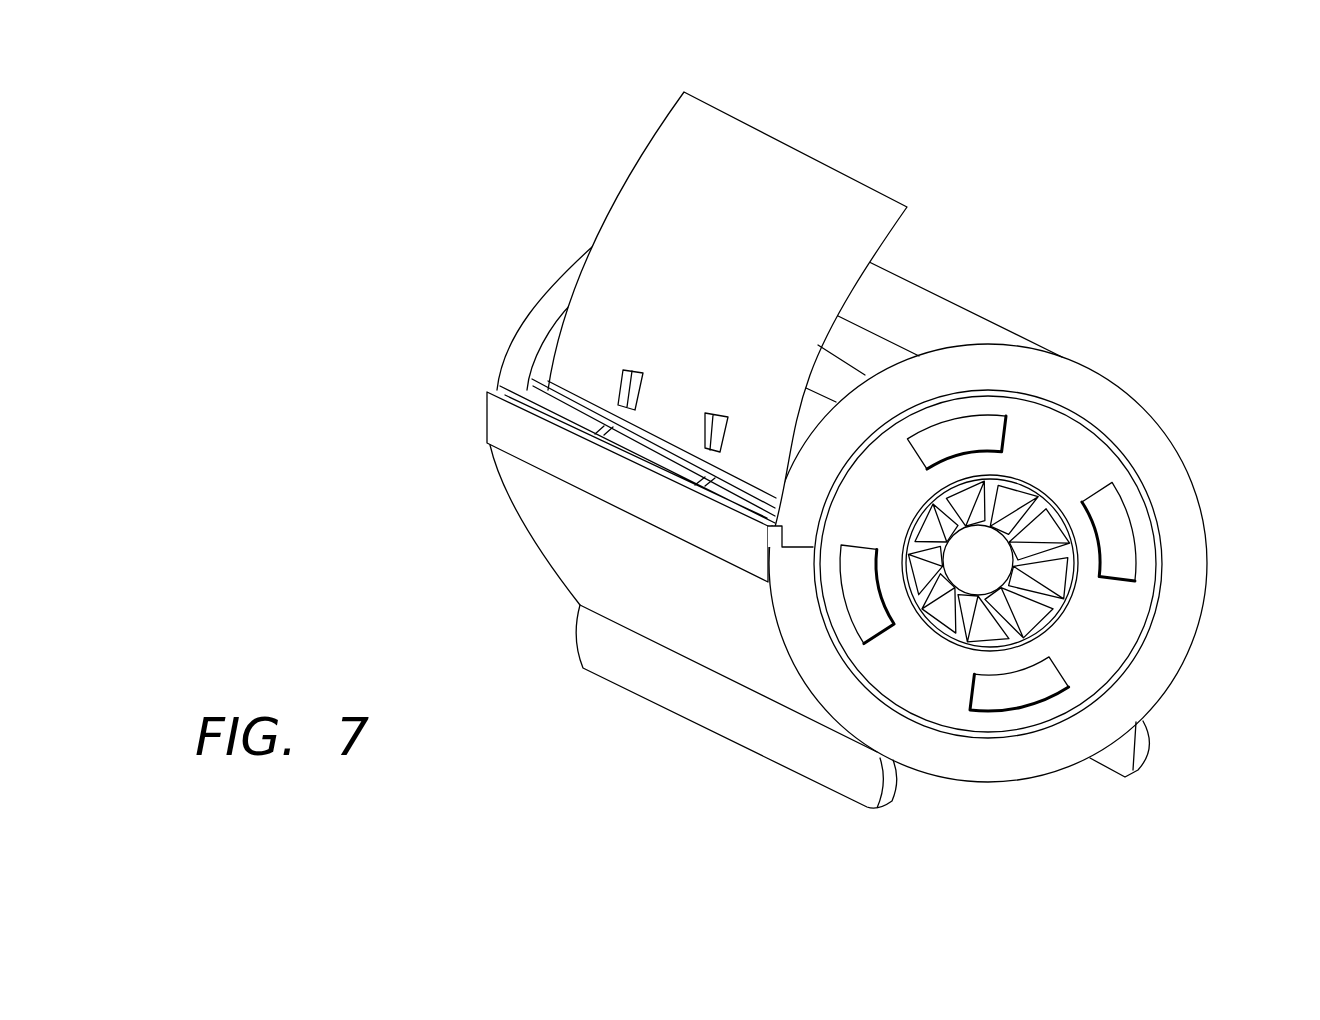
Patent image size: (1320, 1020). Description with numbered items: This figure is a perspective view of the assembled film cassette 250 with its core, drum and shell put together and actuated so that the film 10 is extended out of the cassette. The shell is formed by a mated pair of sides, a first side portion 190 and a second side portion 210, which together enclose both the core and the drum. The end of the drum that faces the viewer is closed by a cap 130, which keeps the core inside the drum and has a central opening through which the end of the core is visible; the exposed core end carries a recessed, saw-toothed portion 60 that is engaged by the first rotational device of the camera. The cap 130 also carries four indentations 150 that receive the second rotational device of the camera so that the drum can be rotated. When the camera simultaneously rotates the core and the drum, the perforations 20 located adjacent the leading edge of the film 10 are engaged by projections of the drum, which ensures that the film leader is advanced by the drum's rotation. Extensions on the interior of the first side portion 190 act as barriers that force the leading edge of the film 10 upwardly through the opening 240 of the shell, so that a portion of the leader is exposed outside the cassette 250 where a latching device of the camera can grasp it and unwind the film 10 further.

The film 10 is at (812, 152).
The perforations 20 is at (728, 410).
The recessed, saw-toothed portion 60 is at (1042, 540).
The cap 130 is at (1102, 630).
The indentations 150 is at (873, 617).
The first side portion 190 is at (962, 310).
The second side portion 210 is at (567, 545).
The opening 240 is at (832, 373).
The film cassette 250 is at (506, 255).